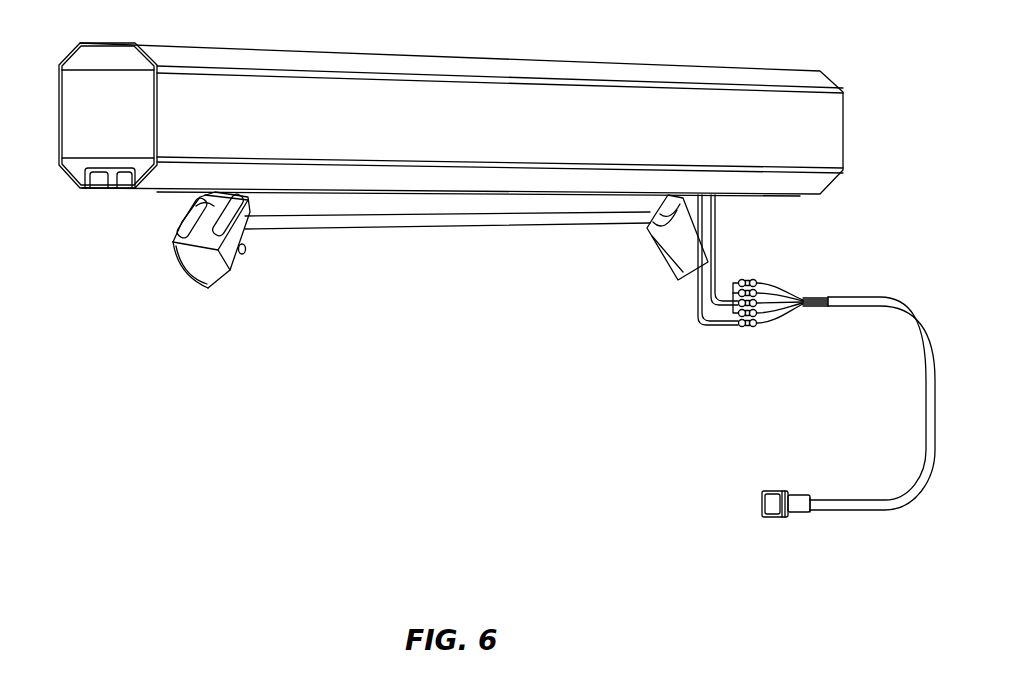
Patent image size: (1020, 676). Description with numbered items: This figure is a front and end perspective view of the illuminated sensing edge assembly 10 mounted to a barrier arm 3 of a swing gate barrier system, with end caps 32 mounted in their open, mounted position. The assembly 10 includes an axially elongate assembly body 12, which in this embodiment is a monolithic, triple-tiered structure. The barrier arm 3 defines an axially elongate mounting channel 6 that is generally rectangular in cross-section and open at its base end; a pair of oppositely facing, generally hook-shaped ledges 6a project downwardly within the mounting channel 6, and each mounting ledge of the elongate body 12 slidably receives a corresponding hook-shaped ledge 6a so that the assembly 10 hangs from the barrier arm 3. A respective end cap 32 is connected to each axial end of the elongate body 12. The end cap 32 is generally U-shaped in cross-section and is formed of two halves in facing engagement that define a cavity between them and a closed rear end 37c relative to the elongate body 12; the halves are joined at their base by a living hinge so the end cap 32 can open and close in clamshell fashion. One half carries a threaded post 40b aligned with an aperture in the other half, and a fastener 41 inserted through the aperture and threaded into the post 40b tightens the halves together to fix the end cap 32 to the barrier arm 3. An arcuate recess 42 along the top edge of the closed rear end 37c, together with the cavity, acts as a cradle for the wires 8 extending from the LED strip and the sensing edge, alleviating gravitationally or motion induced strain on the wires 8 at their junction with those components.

The barrier arm 3 is at (256, 92).
The mounting channel 6 is at (97, 170).
The hook-shaped ledge 6a is at (100, 192).
The wires 8 is at (858, 297).
The illuminated sensing edge assembly 10 is at (408, 263).
The elongate assembly body 12 is at (374, 236).
The end cap 32 is at (242, 273).
The closed rear end 37c is at (197, 272).
The threaded post 40b is at (200, 212).
The fastener 41 is at (245, 252).
The arcuate recess 42 is at (178, 238).